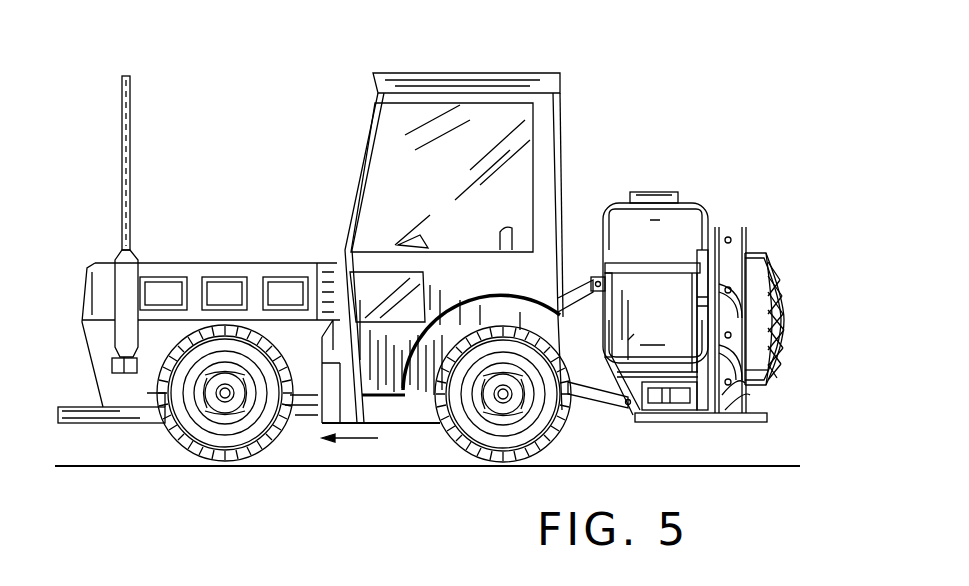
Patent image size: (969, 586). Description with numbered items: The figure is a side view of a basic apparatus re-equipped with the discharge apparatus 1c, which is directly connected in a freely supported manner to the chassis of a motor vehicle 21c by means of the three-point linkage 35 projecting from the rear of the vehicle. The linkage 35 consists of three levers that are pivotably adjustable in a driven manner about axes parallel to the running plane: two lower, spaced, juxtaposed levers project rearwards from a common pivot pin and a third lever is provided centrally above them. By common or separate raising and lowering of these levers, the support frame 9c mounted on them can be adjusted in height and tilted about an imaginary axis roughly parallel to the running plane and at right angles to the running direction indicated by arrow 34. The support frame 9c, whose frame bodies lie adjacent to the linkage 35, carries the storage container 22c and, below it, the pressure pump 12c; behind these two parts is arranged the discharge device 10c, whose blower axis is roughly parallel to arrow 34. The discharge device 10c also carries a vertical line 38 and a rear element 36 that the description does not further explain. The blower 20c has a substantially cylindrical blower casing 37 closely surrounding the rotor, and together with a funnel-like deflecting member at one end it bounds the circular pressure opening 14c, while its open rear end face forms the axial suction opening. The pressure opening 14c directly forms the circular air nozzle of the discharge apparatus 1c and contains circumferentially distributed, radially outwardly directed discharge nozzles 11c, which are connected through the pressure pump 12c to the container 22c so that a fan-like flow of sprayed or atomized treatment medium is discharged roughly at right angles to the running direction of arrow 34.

The discharge apparatus 1c is at (681, 105).
The motor vehicle 21c is at (301, 232).
The storage container 22c is at (618, 213).
The discharge device 10c is at (725, 222).
The discharge nozzles 11c is at (731, 238).
The blower casing 37 is at (760, 265).
The supply pipe 38 is at (706, 314).
The drum face 36 is at (770, 330).
The blower 20c is at (765, 396).
The three-point linkage 35 is at (578, 296).
The support frame 9c is at (632, 416).
The pressure pump 12c is at (673, 398).
The pressure opening 14c is at (735, 385).
The running direction arrow 34 is at (340, 442).